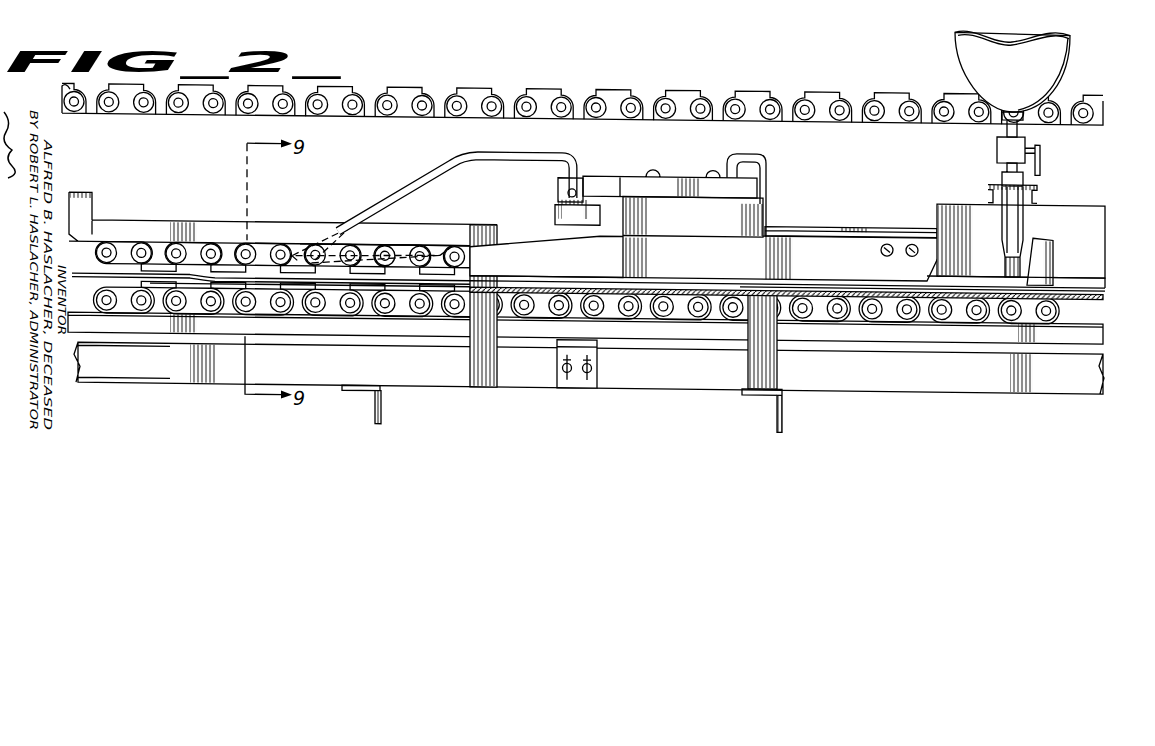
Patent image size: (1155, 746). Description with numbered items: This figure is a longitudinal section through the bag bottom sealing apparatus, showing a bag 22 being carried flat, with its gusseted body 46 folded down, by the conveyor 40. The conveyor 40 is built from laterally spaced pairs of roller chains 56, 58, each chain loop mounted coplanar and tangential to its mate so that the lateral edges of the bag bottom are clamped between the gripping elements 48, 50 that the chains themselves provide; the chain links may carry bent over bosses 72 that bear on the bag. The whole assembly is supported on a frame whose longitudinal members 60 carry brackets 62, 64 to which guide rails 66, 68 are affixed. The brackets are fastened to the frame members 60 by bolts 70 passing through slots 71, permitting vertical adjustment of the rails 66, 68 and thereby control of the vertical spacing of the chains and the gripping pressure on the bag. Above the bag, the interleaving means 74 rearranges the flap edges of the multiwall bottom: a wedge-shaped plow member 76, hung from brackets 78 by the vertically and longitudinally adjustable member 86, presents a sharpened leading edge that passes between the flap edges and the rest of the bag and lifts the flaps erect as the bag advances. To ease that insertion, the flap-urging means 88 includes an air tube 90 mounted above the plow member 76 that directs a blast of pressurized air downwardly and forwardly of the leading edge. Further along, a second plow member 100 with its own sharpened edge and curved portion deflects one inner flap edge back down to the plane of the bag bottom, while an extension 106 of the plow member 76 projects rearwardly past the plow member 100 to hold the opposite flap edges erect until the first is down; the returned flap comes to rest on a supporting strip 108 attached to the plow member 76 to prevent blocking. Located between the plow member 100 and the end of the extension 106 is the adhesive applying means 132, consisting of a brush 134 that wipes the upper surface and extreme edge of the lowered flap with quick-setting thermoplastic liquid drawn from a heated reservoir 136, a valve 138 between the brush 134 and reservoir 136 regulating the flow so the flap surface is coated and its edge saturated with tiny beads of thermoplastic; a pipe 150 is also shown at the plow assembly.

The bag 22 is at (157, 258).
The conveyor 40 is at (208, 236).
The body of the bag 46 is at (513, 285).
The gripping element 48 is at (392, 271).
The gripping element 50 is at (384, 310).
The roller chain 56 is at (404, 122).
The roller chain 58 is at (378, 321).
The longitudinal frame member 60 is at (138, 385).
The bracket 62 is at (556, 216).
The bracket 64 is at (556, 376).
The guide rail 66 is at (320, 228).
The guide rail 68 is at (320, 334).
The bolt 70 is at (561, 367).
The slot 71 is at (565, 381).
The bent over boss 72 is at (416, 86).
The interleaving means 74 is at (806, 213).
The plow member 76 is at (600, 264).
The bracket 78 is at (558, 202).
The adjustable member 86 is at (697, 177).
The flap-urging means 88 is at (290, 247).
The air tube 90 is at (430, 190).
The plow member 100 is at (862, 229).
The extension 106 is at (868, 268).
The supporting strip 108 is at (1085, 275).
The adhesive applying means 132 is at (980, 139).
The brush 134 is at (1004, 263).
The heated reservoir 136 is at (1012, 42).
The valve 138 is at (995, 150).
The pipe 150 is at (748, 156).